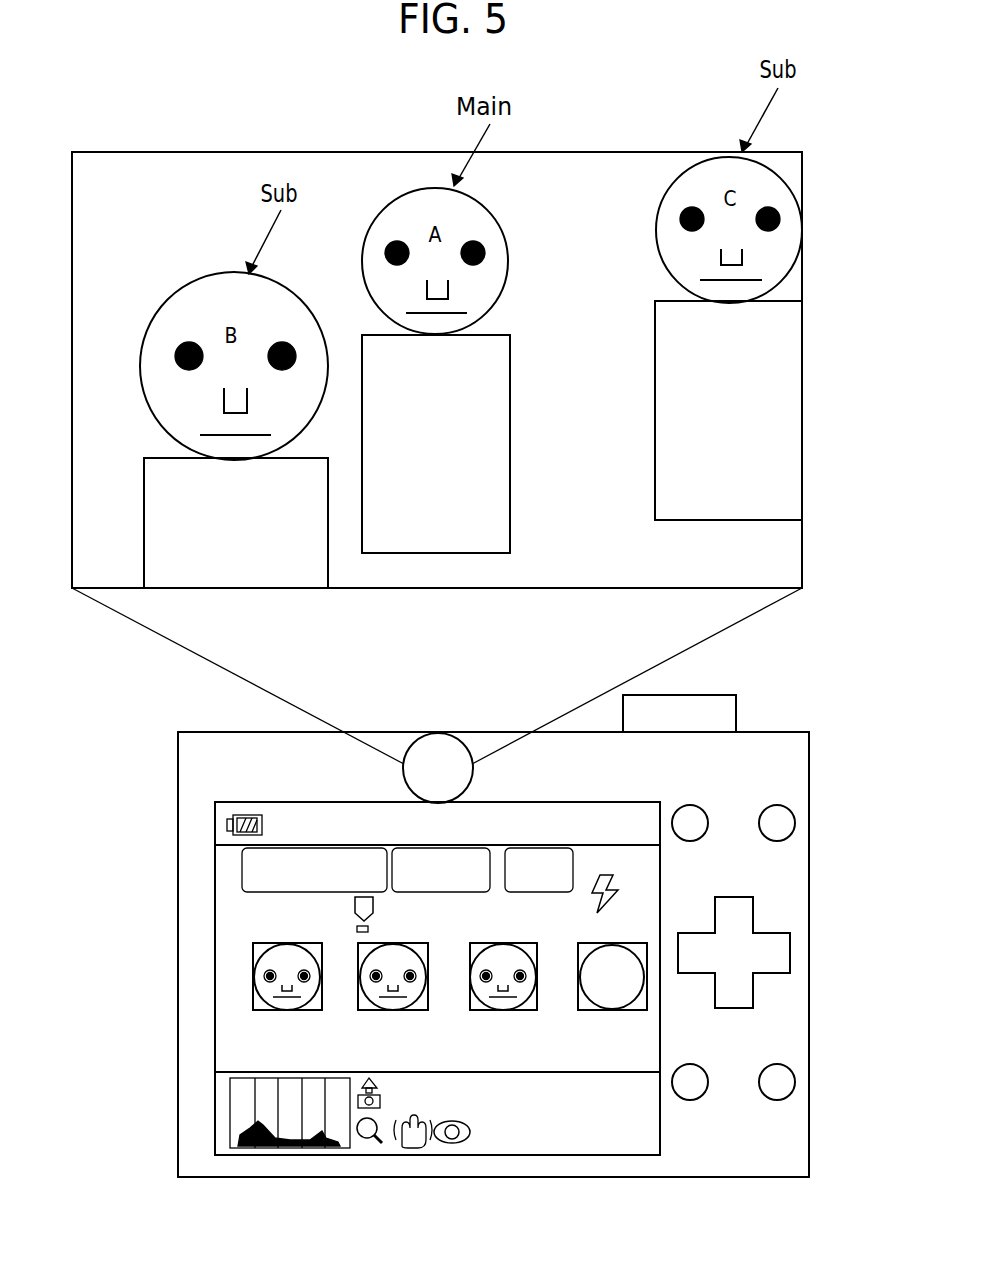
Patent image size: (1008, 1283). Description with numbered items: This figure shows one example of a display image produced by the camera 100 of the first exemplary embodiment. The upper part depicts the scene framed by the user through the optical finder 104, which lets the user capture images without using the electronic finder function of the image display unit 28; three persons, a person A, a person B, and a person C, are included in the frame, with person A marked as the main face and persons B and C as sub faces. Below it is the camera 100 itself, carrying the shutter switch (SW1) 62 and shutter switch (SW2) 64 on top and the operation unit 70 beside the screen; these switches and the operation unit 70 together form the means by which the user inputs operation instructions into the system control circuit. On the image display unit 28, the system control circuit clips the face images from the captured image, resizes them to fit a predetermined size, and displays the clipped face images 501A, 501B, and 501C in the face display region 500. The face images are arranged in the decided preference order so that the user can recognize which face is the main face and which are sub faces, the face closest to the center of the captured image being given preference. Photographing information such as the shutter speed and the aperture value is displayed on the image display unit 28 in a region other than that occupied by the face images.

The camera 100 is at (798, 668).
The optical finder 104 is at (405, 780).
The image display unit 28 is at (375, 1009).
The shutter switch (SW1) 62 is at (732, 712).
The shutter switch (SW2) 64 is at (736, 705).
The operation unit 70 is at (800, 960).
The face display region 500 is at (371, 1080).
The clipped face image 501A is at (253, 1003).
The clipped face image 501B is at (423, 1005).
The clipped face image 501C is at (537, 1007).